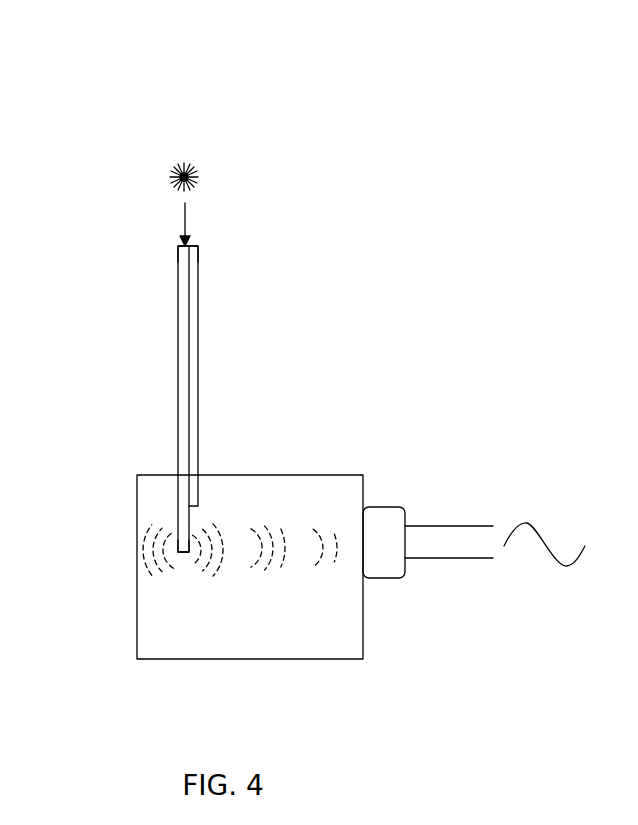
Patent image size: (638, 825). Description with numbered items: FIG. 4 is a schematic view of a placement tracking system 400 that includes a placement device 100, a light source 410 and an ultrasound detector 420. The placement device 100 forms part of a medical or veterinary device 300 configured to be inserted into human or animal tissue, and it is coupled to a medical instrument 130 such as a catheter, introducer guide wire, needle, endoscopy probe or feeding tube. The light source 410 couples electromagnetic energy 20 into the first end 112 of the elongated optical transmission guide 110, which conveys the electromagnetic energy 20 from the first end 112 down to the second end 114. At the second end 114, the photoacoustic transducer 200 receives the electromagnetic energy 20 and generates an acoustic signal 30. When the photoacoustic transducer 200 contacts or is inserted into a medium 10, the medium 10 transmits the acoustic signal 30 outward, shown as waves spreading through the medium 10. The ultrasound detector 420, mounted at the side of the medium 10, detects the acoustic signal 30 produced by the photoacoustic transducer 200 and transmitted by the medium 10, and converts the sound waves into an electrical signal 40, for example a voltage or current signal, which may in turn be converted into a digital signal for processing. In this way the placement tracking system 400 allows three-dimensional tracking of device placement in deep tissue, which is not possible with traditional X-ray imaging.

The placement tracking system 400 is at (457, 53).
The medical or veterinary device 300 is at (278, 137).
The light source 410 is at (170, 172).
The electromagnetic energy 20 is at (182, 224).
The placement device 100 is at (187, 386).
The elongated optical transmission guide 110 is at (178, 317).
The medical instrument 130 is at (198, 317).
The first end 112 is at (178, 268).
The second end 114 is at (189, 518).
The medium 10 is at (155, 640).
The photoacoustic transducer 200 is at (178, 534).
The acoustic signal 30 is at (280, 520).
The ultrasound detector 420 is at (383, 507).
The electrical signal 40 is at (545, 514).